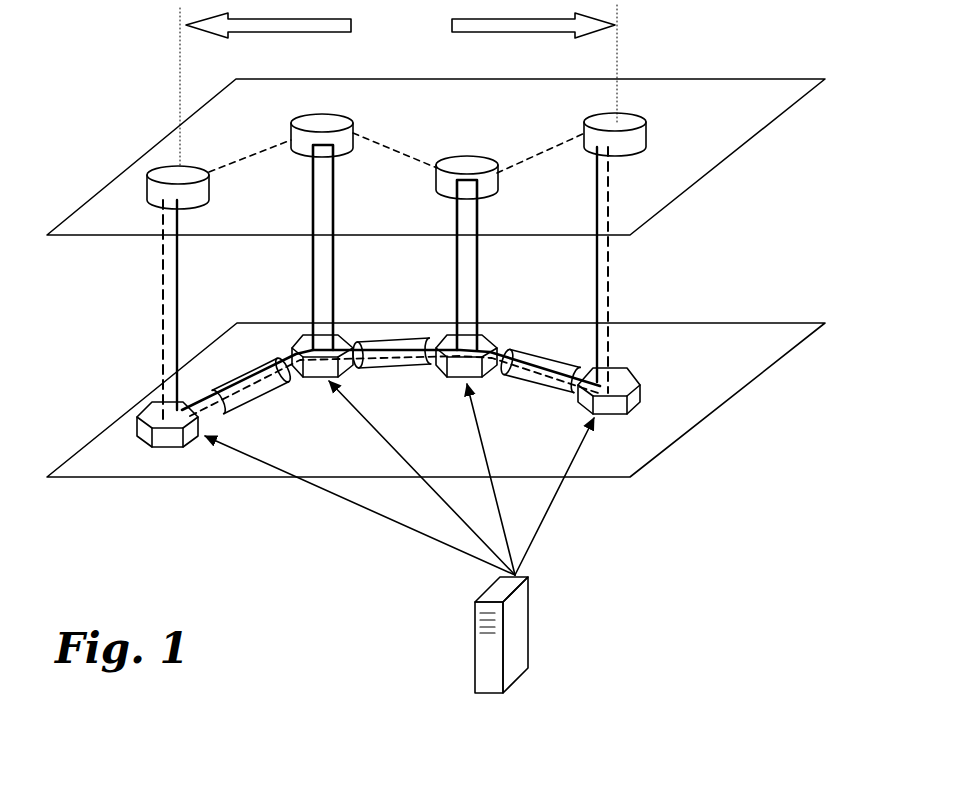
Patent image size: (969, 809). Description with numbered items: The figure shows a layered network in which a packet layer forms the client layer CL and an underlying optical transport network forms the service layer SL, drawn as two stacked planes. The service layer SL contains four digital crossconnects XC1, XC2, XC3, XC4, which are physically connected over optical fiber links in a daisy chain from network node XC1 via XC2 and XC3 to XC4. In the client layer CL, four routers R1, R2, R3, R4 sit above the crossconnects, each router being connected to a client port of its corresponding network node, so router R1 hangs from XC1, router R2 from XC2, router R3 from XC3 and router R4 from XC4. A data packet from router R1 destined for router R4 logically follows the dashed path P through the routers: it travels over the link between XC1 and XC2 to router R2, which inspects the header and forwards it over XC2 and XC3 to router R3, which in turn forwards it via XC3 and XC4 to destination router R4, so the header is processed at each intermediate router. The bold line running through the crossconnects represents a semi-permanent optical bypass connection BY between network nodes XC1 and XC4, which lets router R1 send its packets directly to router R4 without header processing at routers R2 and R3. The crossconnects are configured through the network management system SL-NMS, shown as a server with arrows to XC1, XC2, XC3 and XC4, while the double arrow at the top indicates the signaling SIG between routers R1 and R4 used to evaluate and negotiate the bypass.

The signaling SIG is at (400, 25).
The client layer CL is at (436, 157).
The service layer SL is at (436, 400).
The router R1 is at (196, 275).
The router R2 is at (340, 221).
The router R3 is at (480, 238).
The router R4 is at (637, 243).
The path P is at (397, 169).
The optical bypass connection BY is at (428, 337).
The digital crossconnect XC1 is at (143, 462).
The digital crossconnect XC2 is at (359, 375).
The digital crossconnect XC3 is at (492, 376).
The digital crossconnect XC4 is at (641, 383).
The network management system SL-NMS is at (437, 537).